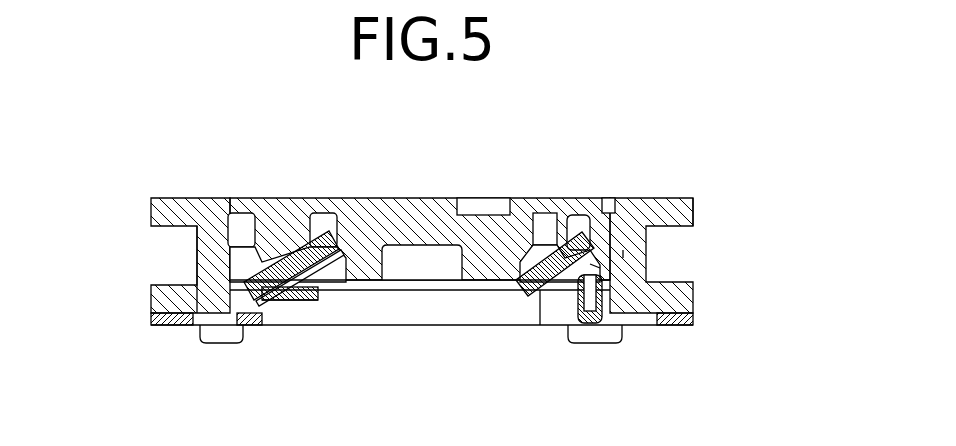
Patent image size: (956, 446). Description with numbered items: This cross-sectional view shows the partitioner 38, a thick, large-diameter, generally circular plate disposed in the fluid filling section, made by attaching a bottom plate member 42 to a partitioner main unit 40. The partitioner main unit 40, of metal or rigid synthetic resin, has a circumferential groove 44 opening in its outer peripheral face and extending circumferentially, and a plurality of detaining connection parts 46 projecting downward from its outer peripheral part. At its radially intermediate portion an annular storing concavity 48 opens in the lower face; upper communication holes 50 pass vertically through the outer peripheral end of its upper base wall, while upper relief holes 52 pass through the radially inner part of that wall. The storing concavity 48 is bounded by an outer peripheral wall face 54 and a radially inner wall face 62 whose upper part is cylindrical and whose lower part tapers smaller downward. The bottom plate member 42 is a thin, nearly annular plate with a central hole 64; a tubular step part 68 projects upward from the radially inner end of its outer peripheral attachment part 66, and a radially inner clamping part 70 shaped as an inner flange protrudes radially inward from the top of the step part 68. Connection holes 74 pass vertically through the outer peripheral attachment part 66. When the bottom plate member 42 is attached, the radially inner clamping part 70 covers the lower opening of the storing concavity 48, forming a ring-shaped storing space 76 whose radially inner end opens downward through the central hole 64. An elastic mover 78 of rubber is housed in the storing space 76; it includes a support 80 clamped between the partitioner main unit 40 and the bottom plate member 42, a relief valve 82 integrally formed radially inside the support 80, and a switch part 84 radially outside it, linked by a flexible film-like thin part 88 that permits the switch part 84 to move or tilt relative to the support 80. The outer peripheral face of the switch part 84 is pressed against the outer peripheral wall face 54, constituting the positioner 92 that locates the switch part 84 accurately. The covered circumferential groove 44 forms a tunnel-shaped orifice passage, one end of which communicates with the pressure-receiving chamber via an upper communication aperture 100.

The partitioner 38 is at (717, 182).
The partitioner main unit 40 is at (372, 223).
The bottom plate member 42 is at (288, 305).
The circumferential groove 44 is at (180, 280).
The detaining connection part 46 is at (222, 330).
The storing concavity 48 is at (287, 247).
The upper communication hole 50 is at (588, 235).
The upper relief hole 52 is at (530, 222).
The outer peripheral wall face 54 is at (603, 273).
The radially inner wall face 62 is at (507, 292).
The central hole 64 is at (342, 285).
The outer peripheral attachment part 66 is at (165, 318).
The step part 68 is at (263, 317).
The radially inner clamping part 70 is at (307, 292).
The connection hole 74 is at (190, 325).
The storing space 76 is at (245, 240).
The elastic mover 78 is at (545, 304).
The support 80 is at (548, 268).
The relief valve 82 is at (492, 240).
The switch part 84 is at (632, 252).
The thin part 88 is at (590, 266).
The positioner 92 is at (230, 262).
The upper communication aperture 100 is at (645, 215).